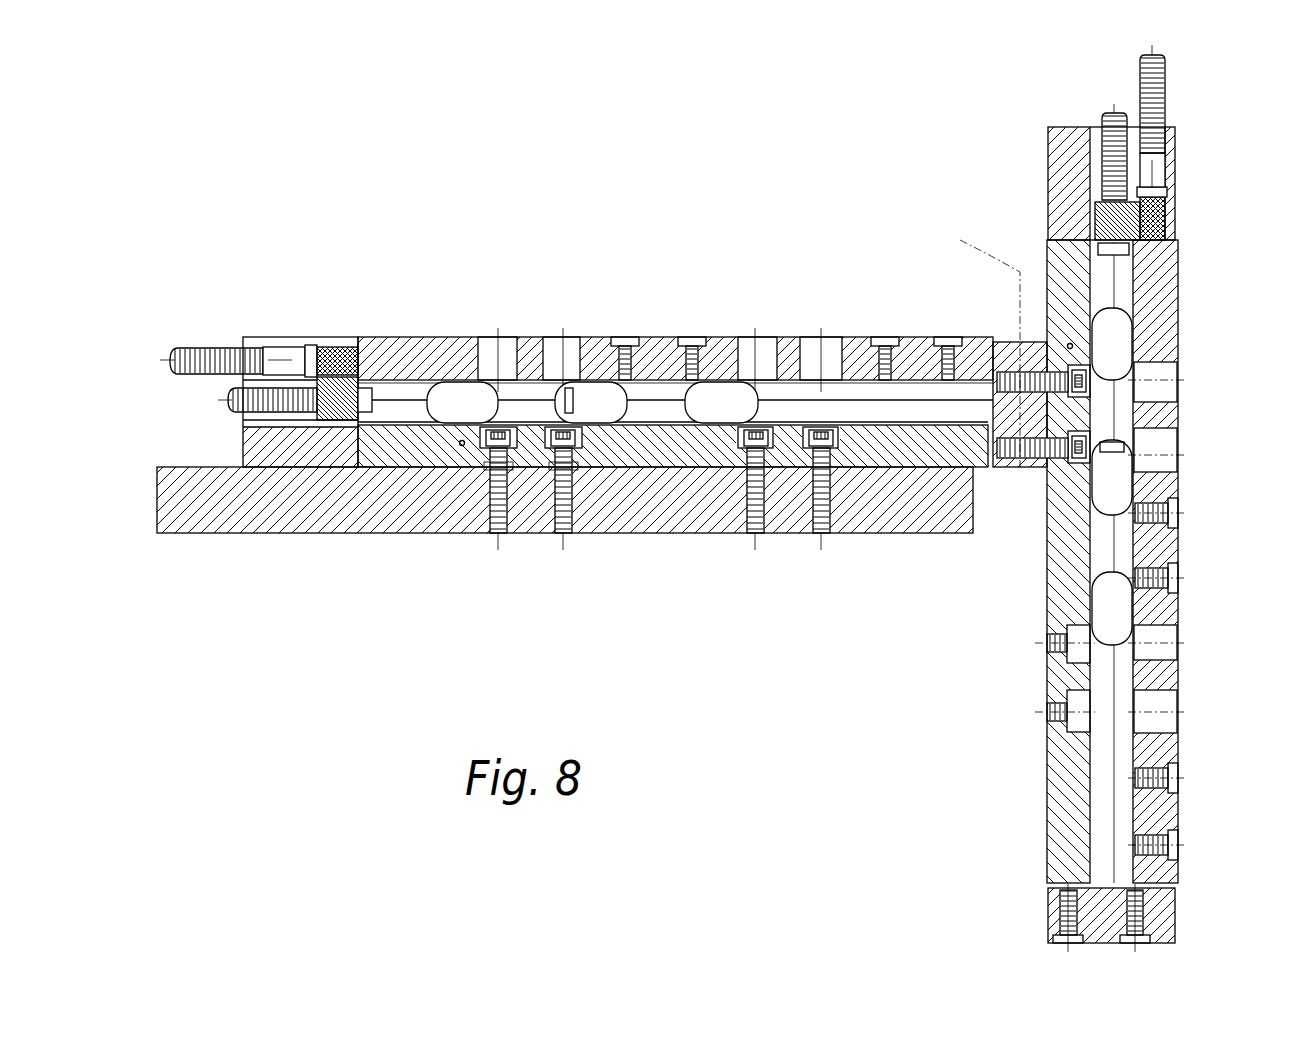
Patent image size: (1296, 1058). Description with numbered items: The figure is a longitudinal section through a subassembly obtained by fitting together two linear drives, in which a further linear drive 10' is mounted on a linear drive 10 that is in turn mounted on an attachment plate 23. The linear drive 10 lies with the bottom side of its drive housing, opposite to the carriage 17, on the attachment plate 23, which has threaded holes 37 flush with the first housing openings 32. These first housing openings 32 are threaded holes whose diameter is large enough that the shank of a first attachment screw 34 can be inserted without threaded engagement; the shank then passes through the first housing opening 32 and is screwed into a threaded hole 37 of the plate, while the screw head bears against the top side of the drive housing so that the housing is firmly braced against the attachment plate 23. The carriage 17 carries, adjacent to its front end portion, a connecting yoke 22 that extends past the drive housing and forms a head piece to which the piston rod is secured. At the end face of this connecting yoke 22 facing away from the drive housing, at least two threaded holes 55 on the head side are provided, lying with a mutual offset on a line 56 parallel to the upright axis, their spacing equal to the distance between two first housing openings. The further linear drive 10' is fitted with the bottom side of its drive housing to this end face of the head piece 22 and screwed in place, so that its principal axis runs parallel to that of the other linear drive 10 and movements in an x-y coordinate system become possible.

The linear drive 10 is at (266, 347).
The further linear drive 10' is at (1158, 498).
The carriage 17 is at (851, 338).
The connecting yoke 22 is at (1003, 342).
The attachment plate 23 is at (220, 522).
The first housing openings 32 is at (487, 468).
The first attachment screw 34 is at (553, 490).
The threaded holes 37 is at (808, 538).
The threaded holes on the head side 55 is at (1020, 395).
The line 56 is at (983, 337).